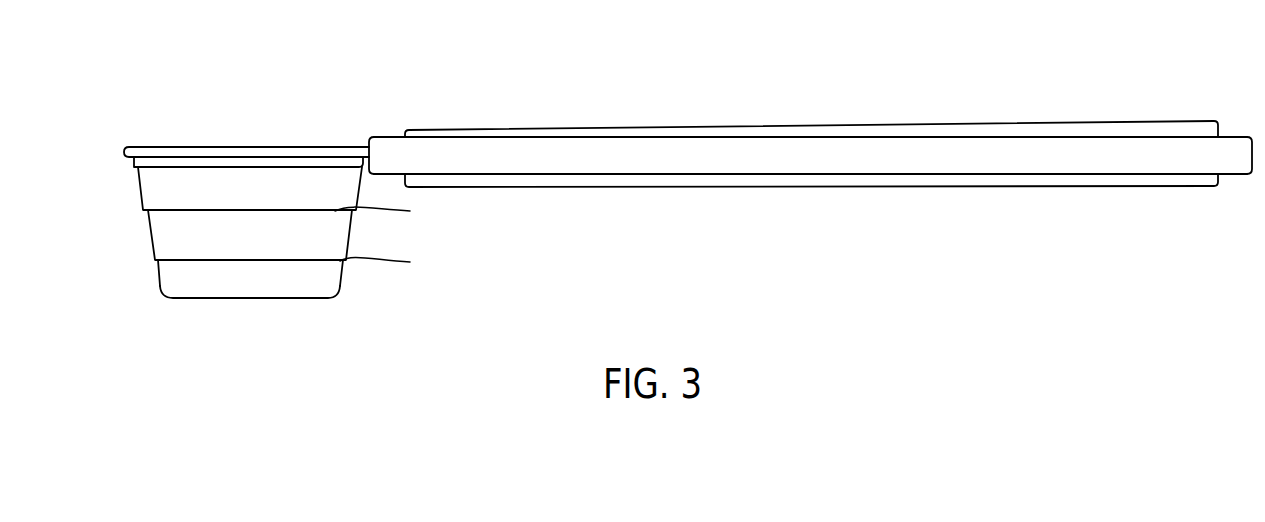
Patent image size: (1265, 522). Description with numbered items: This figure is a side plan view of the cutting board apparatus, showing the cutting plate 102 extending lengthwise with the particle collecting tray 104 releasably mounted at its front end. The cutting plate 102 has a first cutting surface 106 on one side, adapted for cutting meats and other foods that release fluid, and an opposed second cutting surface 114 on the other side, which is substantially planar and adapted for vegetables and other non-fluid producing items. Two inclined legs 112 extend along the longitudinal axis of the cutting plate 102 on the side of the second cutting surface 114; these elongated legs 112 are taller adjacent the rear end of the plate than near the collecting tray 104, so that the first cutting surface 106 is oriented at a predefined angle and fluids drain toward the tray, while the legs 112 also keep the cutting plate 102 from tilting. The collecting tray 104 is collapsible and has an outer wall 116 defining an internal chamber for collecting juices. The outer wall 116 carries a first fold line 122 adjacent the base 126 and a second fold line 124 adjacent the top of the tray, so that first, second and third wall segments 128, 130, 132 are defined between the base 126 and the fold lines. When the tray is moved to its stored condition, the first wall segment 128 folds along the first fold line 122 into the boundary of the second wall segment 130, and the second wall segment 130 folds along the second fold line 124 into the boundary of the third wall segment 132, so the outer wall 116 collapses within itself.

The cutting plate 102 is at (947, 167).
The particle collecting tray 104 is at (249, 269).
The first cutting surface 106 is at (1232, 186).
The inclined legs 112 is at (753, 118).
The second cutting surface 114 is at (390, 136).
The outer wall 116 is at (133, 175).
The first fold line 122 is at (396, 260).
The second fold line 124 is at (394, 211).
The base 126 is at (287, 308).
The first wall segment 128 is at (265, 291).
The second wall segment 130 is at (265, 249).
The third wall segment 132 is at (265, 199).